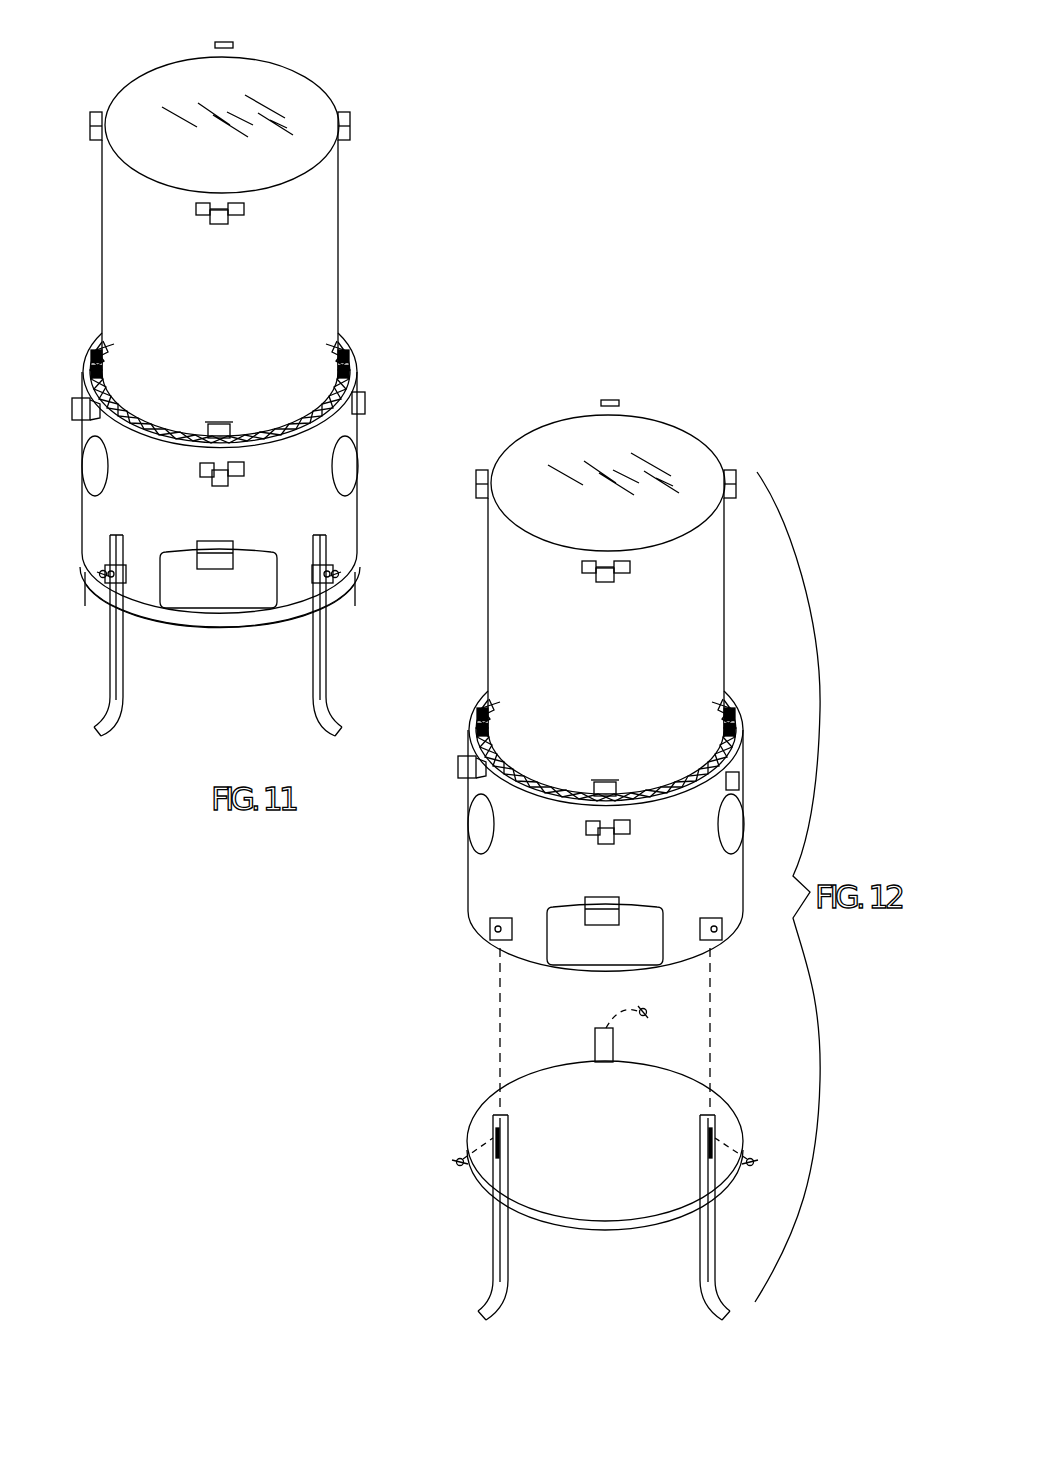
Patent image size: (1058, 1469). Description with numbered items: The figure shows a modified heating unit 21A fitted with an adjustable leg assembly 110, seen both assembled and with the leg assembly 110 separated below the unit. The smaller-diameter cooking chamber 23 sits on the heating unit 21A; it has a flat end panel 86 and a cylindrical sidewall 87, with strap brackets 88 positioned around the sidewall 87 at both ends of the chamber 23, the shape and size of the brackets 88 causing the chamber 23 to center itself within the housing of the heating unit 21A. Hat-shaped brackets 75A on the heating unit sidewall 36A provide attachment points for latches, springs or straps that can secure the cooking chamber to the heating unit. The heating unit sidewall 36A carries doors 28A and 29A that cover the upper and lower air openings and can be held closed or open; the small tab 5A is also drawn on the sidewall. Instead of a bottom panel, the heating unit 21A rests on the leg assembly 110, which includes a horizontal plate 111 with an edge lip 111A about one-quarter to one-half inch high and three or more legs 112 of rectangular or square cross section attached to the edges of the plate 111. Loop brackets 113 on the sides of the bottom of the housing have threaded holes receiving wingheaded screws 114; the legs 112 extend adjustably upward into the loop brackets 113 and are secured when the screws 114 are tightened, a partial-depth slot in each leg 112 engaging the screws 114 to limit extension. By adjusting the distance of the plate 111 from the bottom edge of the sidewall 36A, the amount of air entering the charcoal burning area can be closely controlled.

In FIG. 11, the smaller-diameter cooking chamber 23 is at (318, 55).
In FIG. 12, the smaller-diameter cooking chamber 23 is at (632, 580).
In FIG. 11, the flat end panel 86 is at (182, 70).
In FIG. 12, the flat end panel 86 is at (608, 461).
In FIG. 11, the sidewall 87 is at (322, 258).
In FIG. 12, the sidewall 87 is at (628, 614).
In FIG. 11, the strap brackets 88 is at (228, 45).
In FIG. 12, the strap brackets 88 is at (626, 580).
In FIG. 11, the heating unit 21A is at (372, 398).
In FIG. 12, the heating unit 21A is at (575, 814).
In FIG. 11, the door 28A is at (97, 490).
In FIG. 12, the door 28A is at (607, 816).
In FIG. 11, the door 29A is at (193, 597).
In FIG. 12, the door 29A is at (596, 909).
In FIG. 11, the heating unit sidewall 36A is at (348, 412).
In FIG. 12, the heating unit sidewall 36A is at (449, 758).
In FIG. 11, the latch tab 5A is at (70, 403).
In FIG. 11, the hat-shaped bracket 75A is at (366, 398).
In FIG. 12, the hat-shaped bracket 75A is at (619, 763).
In FIG. 11, the leg assembly 110 is at (134, 722).
In FIG. 12, the leg assembly 110 is at (425, 1212).
In FIG. 11, the horizontal plate 111 is at (247, 630).
In FIG. 12, the horizontal plate 111 is at (578, 1082).
In FIG. 11, the edge lip 111A is at (232, 650).
In FIG. 12, the edge lip 111A is at (605, 1215).
In FIG. 11, the legs 112 is at (108, 675).
In FIG. 12, the legs 112 is at (495, 1258).
In FIG. 11, the loop brackets 113 is at (122, 568).
In FIG. 12, the loop brackets 113 is at (608, 942).
In FIG. 11, the wingheaded screws 114 is at (102, 573).
In FIG. 12, the wingheaded screws 114 is at (460, 1160).